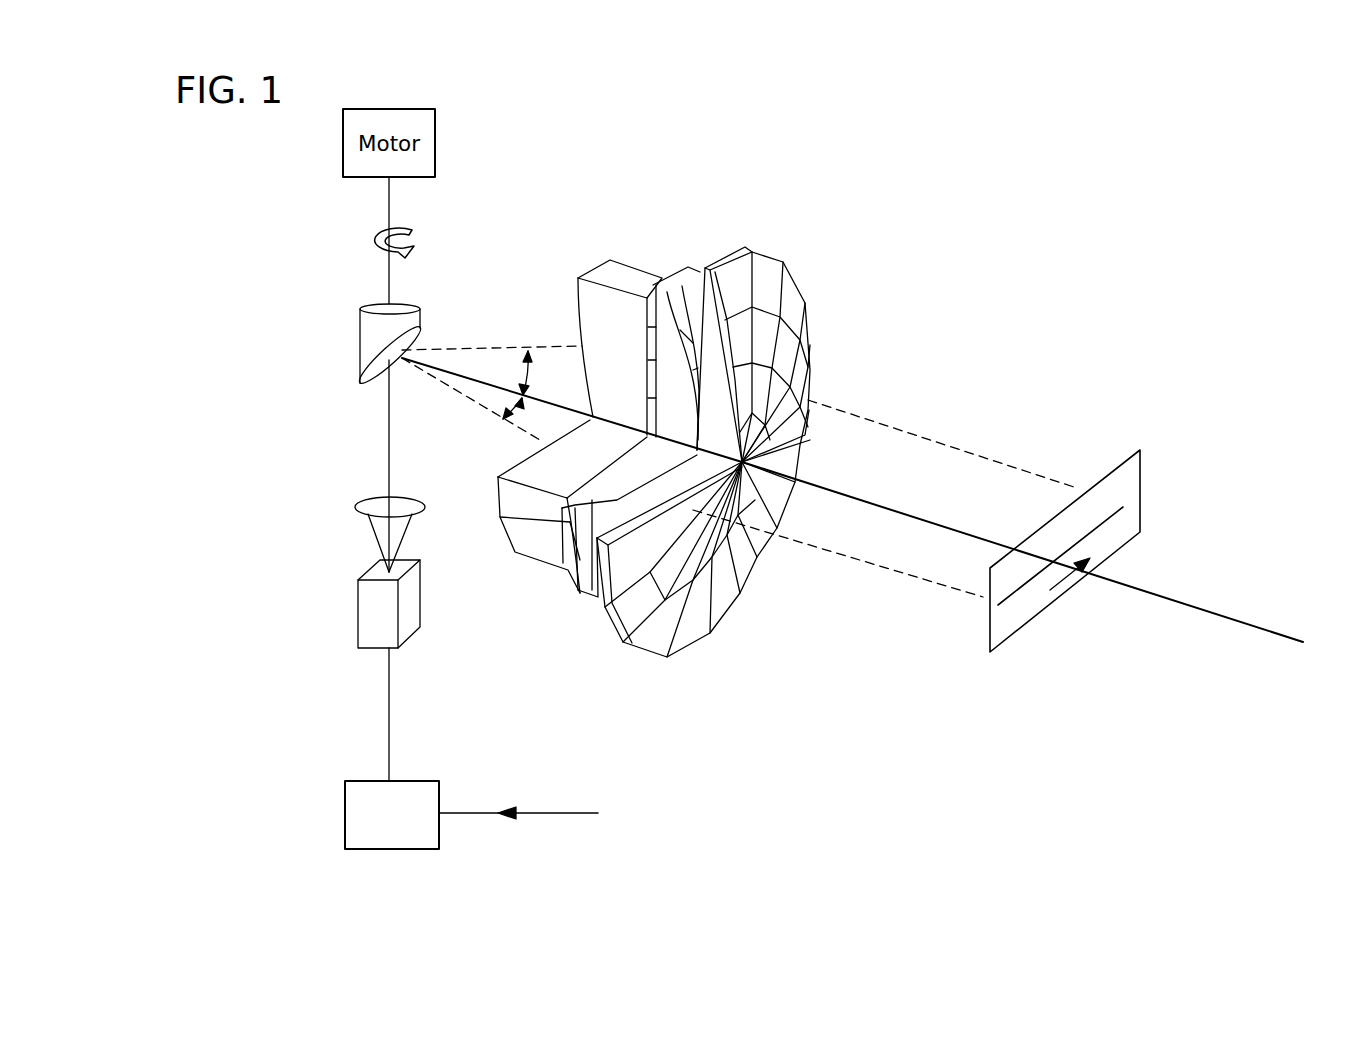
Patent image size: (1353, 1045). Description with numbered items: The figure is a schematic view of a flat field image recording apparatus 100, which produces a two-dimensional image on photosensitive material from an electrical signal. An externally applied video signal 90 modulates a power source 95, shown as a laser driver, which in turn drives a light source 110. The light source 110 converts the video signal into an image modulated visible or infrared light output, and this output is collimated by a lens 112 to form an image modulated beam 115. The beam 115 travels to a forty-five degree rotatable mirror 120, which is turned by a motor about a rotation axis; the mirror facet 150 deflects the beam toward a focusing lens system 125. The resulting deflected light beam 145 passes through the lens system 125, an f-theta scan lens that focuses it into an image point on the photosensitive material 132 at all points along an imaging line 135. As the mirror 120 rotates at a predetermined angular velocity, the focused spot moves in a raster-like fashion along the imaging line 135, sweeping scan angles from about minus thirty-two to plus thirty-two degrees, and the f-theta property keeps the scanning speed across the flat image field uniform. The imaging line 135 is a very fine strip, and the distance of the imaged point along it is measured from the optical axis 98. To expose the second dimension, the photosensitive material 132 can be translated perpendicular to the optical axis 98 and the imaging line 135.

The video signal 90 is at (680, 835).
The power source 95 is at (350, 807).
The optical axis 98 is at (1225, 612).
The flat field image recording apparatus 100 is at (1013, 205).
The light source 110 is at (358, 620).
The lens 112 is at (362, 502).
The image modulated beam 115 is at (387, 430).
The rotatable mirror 120 is at (360, 334).
The focusing lens system 125 is at (805, 237).
The photosensitive material 132 is at (1142, 480).
The imaging line 135 is at (1015, 592).
The deflected light beam 145 is at (466, 380).
The mirror facet 150 is at (417, 339).